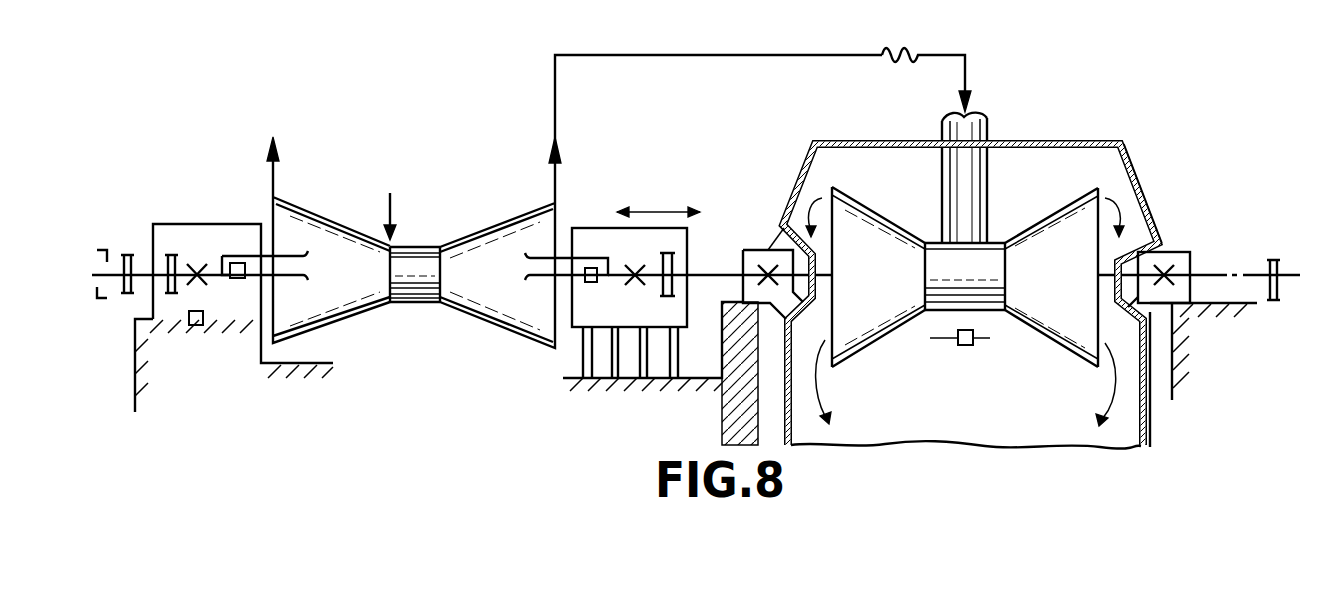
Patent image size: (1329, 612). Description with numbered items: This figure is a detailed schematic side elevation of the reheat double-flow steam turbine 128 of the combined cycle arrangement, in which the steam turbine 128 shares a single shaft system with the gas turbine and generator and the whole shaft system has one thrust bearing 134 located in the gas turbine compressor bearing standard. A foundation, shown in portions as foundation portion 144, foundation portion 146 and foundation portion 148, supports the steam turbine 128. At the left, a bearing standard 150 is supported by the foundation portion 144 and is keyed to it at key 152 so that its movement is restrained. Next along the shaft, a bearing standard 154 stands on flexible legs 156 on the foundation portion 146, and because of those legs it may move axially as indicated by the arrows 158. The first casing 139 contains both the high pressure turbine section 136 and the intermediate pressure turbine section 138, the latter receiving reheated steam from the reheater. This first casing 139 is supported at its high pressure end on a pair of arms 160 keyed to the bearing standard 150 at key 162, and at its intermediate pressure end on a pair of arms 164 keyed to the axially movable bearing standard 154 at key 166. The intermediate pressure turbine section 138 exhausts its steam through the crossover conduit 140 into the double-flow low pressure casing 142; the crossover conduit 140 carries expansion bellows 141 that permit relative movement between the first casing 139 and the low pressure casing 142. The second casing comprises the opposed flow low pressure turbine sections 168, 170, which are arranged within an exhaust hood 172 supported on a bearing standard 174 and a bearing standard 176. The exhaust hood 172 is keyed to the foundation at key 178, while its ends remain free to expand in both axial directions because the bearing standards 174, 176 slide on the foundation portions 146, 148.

The reheat steam turbine 128 is at (930, 262).
The thrust bearing 134 is at (107, 257).
The high pressure turbine section 136 is at (332, 220).
The intermediate pressure turbine section 138 is at (488, 228).
The first casing 139 is at (416, 320).
The crossover conduit 140 is at (797, 55).
The expansion bellows 141 is at (915, 52).
The double-flow low pressure casing 142 is at (1092, 117).
The foundation portion 144 is at (312, 362).
The foundation portion 146 is at (795, 442).
The foundation portion 148 is at (1173, 380).
The bearing standard 150 is at (213, 224).
The key 152 is at (197, 326).
The bearing standard 154 is at (608, 228).
The flexible legs 156 is at (566, 369).
The arrows 158 is at (664, 208).
The pair of arms 160 is at (250, 256).
The key 162 is at (236, 262).
The pair of arms 164 is at (590, 258).
The key 166 is at (584, 284).
The low pressure turbine section 168 is at (882, 222).
The low pressure turbine section 170 is at (1060, 222).
The exhaust hood 172 is at (1137, 173).
The bearing standard 174 is at (742, 265).
The bearing standard 176 is at (1190, 253).
The key 178 is at (962, 346).